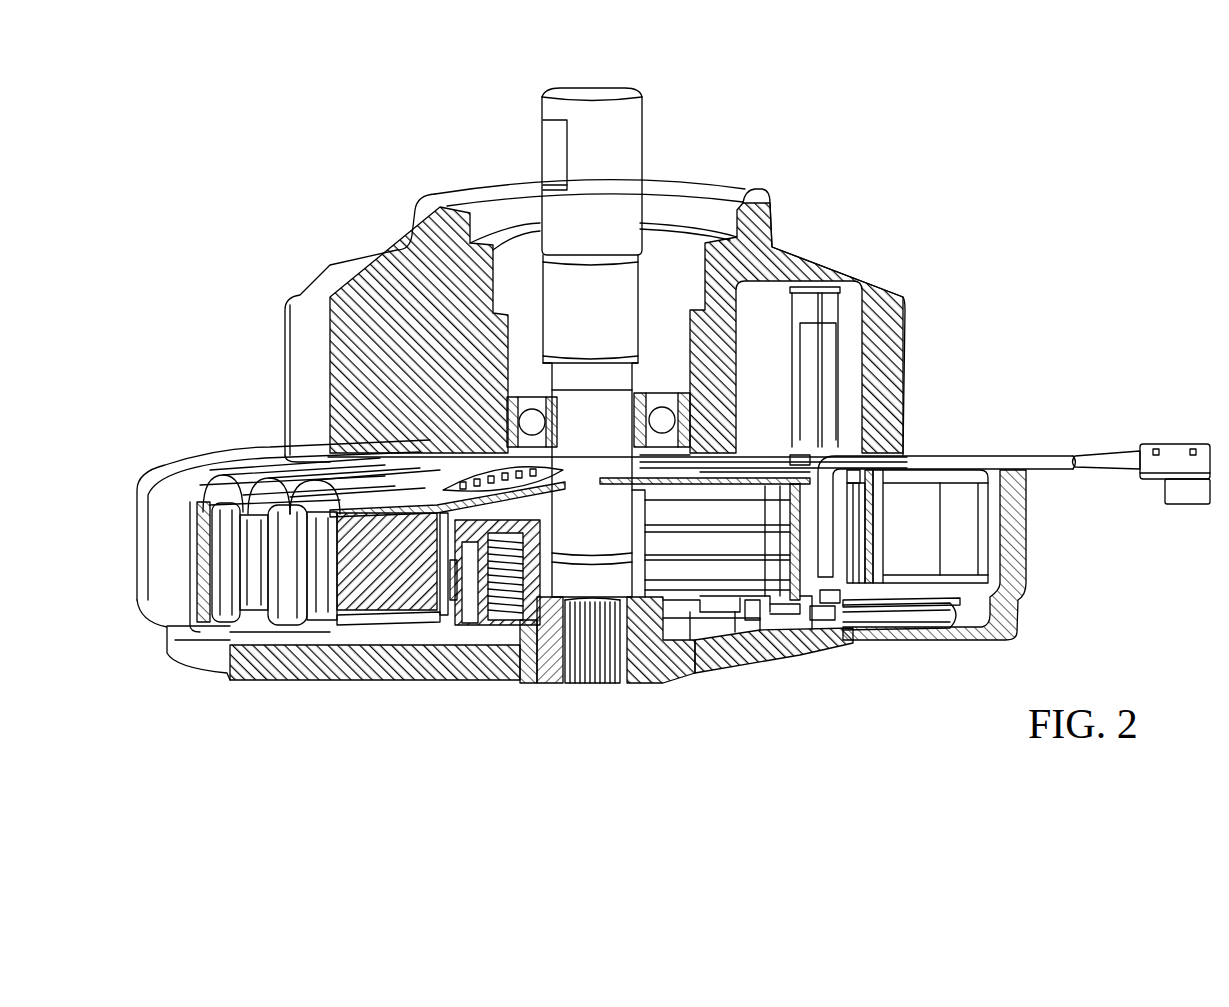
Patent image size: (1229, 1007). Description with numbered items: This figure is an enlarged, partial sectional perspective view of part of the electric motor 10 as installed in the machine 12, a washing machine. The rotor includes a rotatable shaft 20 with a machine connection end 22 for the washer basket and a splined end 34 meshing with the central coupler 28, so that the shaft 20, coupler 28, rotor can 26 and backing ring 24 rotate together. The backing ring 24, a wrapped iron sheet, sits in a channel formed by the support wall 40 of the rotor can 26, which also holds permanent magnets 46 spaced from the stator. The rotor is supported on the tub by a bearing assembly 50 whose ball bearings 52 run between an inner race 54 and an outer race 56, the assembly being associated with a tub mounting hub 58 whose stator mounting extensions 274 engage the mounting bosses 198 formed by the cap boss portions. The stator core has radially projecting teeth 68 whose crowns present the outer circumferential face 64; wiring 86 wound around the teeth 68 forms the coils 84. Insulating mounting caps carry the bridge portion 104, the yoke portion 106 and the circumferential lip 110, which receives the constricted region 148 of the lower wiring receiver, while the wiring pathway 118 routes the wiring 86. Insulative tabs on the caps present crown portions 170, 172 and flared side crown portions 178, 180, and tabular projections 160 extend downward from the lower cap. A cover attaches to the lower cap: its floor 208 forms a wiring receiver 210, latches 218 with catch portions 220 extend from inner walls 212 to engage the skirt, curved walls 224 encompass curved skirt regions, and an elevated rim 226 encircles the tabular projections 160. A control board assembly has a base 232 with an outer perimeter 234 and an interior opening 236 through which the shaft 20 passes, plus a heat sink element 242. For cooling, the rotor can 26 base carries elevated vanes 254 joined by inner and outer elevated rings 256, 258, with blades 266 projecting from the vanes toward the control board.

The electric motor 10 is at (265, 716).
The machine 12 is at (935, 112).
The rotatable shaft 20 is at (623, 297).
The machine connection end 22 is at (620, 132).
The backing ring 24 is at (200, 527).
The rotor can 26 is at (890, 652).
The central coupler 28 is at (643, 660).
The splined end 34 is at (590, 660).
The support wall 40 is at (1028, 530).
The permanent magnets 46 is at (192, 585).
The bearing assembly 50 is at (662, 348).
The ball bearings 52 is at (457, 333).
The inner race 54 is at (557, 437).
The outer race 56 is at (678, 392).
The tub mounting hub 58 is at (350, 272).
The outer circumferential face 64 is at (290, 572).
The teeth 68 is at (225, 572).
The coils 84 is at (953, 552).
The wiring 86 is at (988, 457).
The bridge portion 104 is at (490, 530).
The yoke portion 106 is at (405, 493).
The circumferential lip 110 is at (797, 542).
The wiring pathway 118 is at (287, 510).
The constricted region 148 is at (793, 608).
The tabular projections 160 is at (402, 592).
The crown portion 170 is at (240, 503).
The crown portion 172 is at (300, 588).
The flared side crown portion 178 is at (340, 592).
The flared side crown portion 180 is at (313, 585).
The mounting bosses 198 is at (750, 495).
The floor 208 is at (807, 602).
The wiring receiver 210 is at (770, 552).
The inner walls 212 is at (680, 610).
The latches 218 is at (430, 603).
The catch portions 220 is at (456, 603).
The curved walls 224 is at (823, 614).
The elevated rim 226 is at (400, 640).
The base 232 is at (733, 468).
The outer perimeter 234 is at (515, 475).
The interior opening 236 is at (640, 495).
The heat sink element 242 is at (497, 515).
The elevated vanes 254 is at (907, 618).
The inner elevated ring 256 is at (753, 605).
The outer elevated ring 258 is at (827, 598).
The blades 266 is at (673, 592).
The stator mounting extensions 274 is at (797, 463).